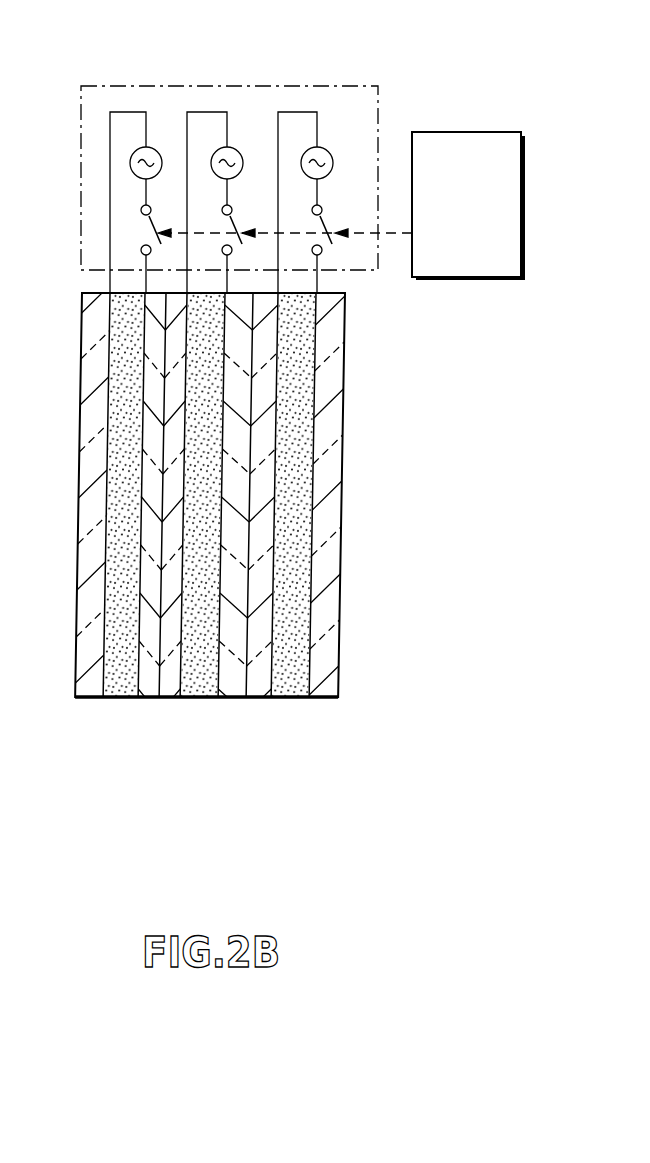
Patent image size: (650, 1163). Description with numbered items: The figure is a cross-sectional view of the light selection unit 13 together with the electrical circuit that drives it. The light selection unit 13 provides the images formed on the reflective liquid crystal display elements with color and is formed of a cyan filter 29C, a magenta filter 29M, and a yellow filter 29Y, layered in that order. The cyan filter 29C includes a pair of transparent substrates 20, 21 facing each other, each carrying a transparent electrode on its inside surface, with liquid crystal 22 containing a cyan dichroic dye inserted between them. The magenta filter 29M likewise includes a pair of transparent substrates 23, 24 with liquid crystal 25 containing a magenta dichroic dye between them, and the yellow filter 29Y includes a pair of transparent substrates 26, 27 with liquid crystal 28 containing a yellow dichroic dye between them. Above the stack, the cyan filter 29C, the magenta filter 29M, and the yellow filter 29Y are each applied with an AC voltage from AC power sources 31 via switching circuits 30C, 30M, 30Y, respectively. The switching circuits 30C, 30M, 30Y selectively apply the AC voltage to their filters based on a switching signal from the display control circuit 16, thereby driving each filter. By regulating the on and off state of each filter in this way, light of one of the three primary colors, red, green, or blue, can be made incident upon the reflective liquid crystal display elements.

The light selection unit 13 is at (210, 592).
The display control circuit 16 is at (480, 279).
The transparent substrate 20 is at (327, 530).
The transparent substrate 21 is at (262, 698).
The liquid crystal 22 is at (290, 698).
The transparent substrate 23 is at (237, 698).
The transparent substrate 24 is at (175, 698).
The liquid crystal 25 is at (203, 698).
The transparent substrate 26 is at (149, 534).
The transparent substrate 27 is at (88, 698).
The liquid crystal 28 is at (122, 698).
The yellow filter 29Y is at (120, 564).
The magenta filter 29M is at (206, 569).
The cyan filter 29C is at (296, 569).
The switching circuit 30Y is at (148, 222).
The switching circuit 30M is at (238, 216).
The switching circuit 30C is at (345, 216).
The AC power source 31 is at (153, 149).